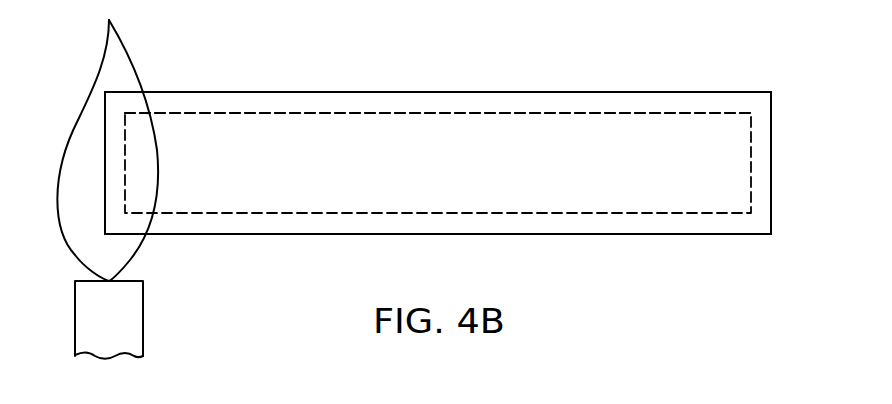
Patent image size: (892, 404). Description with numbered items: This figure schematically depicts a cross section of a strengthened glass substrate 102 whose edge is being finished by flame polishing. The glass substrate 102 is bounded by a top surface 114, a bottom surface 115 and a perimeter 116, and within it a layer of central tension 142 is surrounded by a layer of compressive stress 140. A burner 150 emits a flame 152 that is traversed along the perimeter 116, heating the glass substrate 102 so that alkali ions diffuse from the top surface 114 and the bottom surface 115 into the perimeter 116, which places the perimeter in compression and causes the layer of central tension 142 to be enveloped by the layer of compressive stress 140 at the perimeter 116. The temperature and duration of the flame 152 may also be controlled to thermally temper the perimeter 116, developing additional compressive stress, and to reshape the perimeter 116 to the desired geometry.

The glass substrate 102 is at (620, 82).
The top surface 114 is at (256, 91).
The bottom surface 115 is at (617, 235).
The perimeter 116 is at (772, 158).
The layer of compressive stress 140 is at (394, 100).
The layer of central tension 142 is at (538, 138).
The burner 150 is at (143, 320).
The flame 152 is at (133, 52).